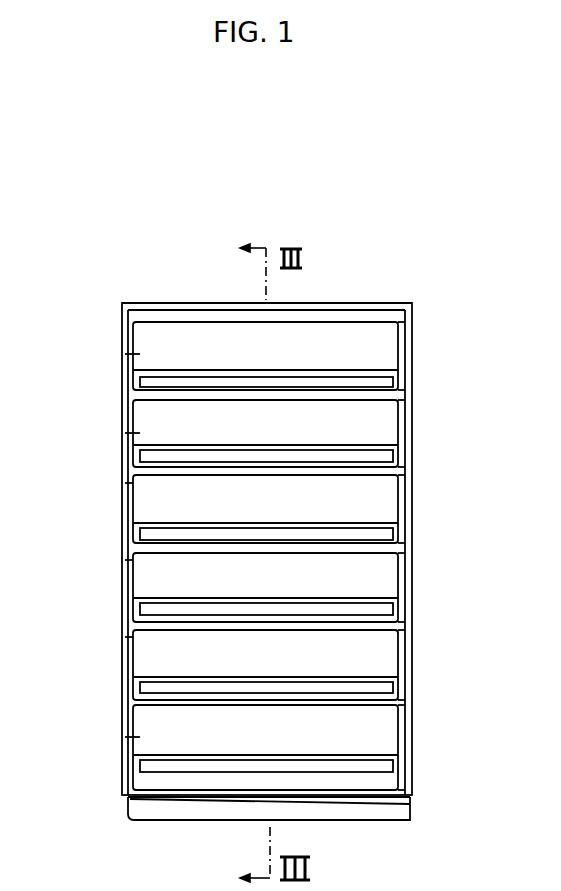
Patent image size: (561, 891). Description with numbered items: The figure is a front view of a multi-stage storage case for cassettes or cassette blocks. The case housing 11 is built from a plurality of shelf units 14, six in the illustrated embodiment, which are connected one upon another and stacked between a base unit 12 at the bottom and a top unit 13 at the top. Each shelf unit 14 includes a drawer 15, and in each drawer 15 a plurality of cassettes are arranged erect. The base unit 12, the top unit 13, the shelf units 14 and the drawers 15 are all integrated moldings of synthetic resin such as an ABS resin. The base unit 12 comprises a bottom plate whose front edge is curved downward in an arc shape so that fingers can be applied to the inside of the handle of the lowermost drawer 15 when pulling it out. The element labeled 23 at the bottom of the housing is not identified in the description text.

The case housing 11 is at (117, 345).
The base unit 12 is at (400, 808).
The top unit 13 is at (413, 308).
The shelf unit 14 is at (413, 398).
The drawer 15 is at (125, 354).
The bottom plate 23 is at (227, 800).